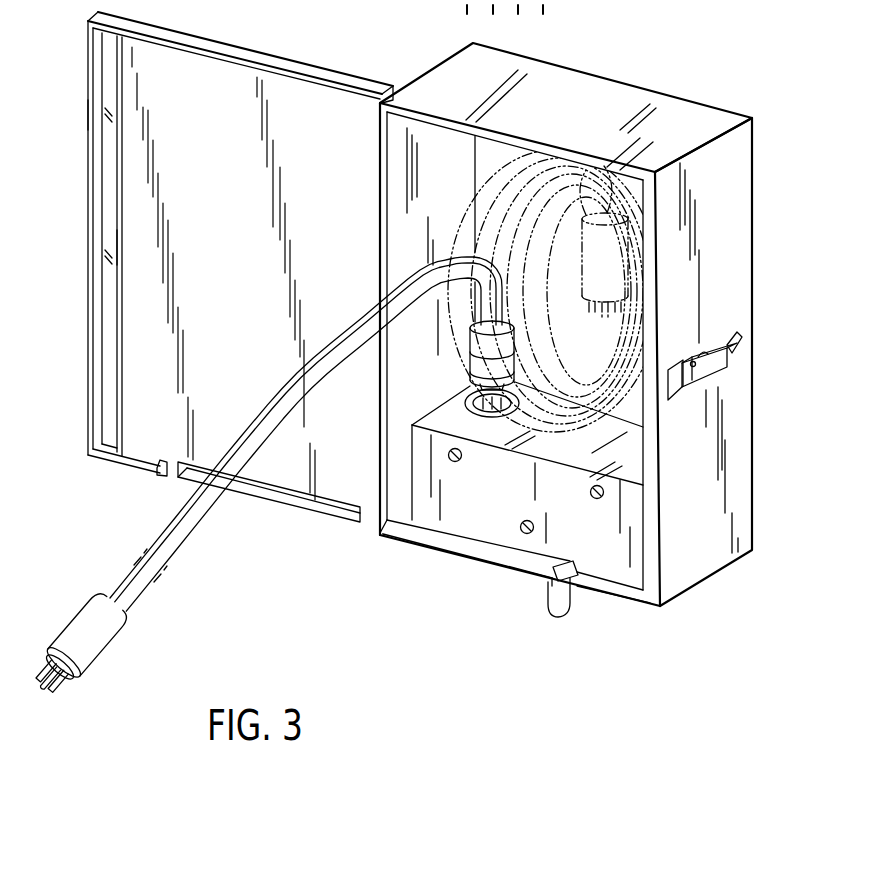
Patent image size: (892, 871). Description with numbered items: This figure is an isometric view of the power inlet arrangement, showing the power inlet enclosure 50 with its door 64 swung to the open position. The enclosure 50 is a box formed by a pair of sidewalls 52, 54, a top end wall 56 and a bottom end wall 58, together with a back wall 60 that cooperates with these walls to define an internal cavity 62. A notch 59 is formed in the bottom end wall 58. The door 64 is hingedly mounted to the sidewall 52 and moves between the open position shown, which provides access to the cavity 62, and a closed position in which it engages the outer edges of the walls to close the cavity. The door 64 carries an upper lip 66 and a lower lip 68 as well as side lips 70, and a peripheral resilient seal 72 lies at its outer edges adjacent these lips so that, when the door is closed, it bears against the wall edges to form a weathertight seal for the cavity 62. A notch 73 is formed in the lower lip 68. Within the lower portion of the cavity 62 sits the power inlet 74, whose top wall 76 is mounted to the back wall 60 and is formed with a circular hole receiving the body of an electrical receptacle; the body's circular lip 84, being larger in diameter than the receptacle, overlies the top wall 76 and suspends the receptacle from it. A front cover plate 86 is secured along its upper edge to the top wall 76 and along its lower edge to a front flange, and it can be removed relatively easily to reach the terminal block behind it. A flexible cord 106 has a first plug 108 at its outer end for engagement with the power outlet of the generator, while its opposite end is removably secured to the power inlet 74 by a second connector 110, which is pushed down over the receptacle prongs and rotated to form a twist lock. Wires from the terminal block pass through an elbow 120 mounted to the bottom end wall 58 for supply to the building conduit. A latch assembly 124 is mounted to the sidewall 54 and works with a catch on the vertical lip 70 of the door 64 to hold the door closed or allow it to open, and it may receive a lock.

The power inlet enclosure 50 is at (390, 596).
The sidewall 52 is at (400, 236).
The sidewall 54 is at (737, 183).
The top end wall 56 is at (603, 83).
The bottom end wall 58 is at (518, 567).
The notch 59 is at (566, 573).
The back wall 60 is at (572, 361).
The internal cavity 62 is at (432, 140).
The door 64 is at (145, 347).
The upper lip 66 is at (195, 37).
The lower lip 68 is at (193, 481).
The side lip 70 is at (88, 115).
The peripheral resilient seal 72 is at (113, 247).
The notch 73 is at (167, 477).
The power inlet 74 is at (486, 547).
The top wall 76 is at (627, 458).
The circular lip 84 is at (463, 406).
The front cover plate 86 is at (475, 513).
The flexible cord 106 is at (202, 527).
The first plug 108 is at (103, 658).
The second connector 110 is at (462, 348).
The elbow 120 is at (580, 598).
The latch assembly 124 is at (745, 340).